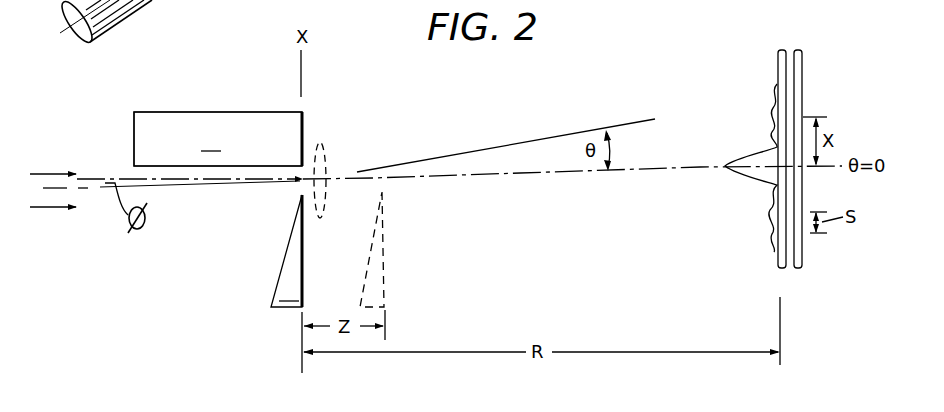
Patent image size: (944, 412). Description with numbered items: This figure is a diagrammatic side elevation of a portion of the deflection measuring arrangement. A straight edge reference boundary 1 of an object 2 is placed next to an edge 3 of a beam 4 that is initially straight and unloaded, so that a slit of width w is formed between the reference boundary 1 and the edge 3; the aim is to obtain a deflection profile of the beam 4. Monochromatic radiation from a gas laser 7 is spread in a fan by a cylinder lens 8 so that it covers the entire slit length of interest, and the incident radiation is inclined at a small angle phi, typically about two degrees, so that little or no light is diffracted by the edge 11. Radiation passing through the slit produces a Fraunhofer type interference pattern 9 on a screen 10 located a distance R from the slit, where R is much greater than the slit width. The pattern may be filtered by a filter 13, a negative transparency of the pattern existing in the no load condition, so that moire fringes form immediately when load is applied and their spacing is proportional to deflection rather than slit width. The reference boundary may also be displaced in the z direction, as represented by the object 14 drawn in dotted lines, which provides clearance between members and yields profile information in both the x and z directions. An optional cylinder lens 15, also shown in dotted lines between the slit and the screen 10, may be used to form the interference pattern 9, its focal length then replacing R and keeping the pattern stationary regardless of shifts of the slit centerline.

The straight edge reference boundary 1 is at (302, 195).
The object 2 is at (286, 251).
The edge 3 is at (302, 166).
The beam 4 is at (218, 139).
The gas laser 7 is at (126, 10).
The cylinder lens 8 is at (213, 0).
The Fraunhofer type interference pattern 9 is at (750, 213).
The screen 10 is at (777, 62).
The edge 11 is at (134, 166).
The filter 13 is at (802, 66).
The object 14 is at (376, 279).
The cylinder lens 15 is at (323, 157).